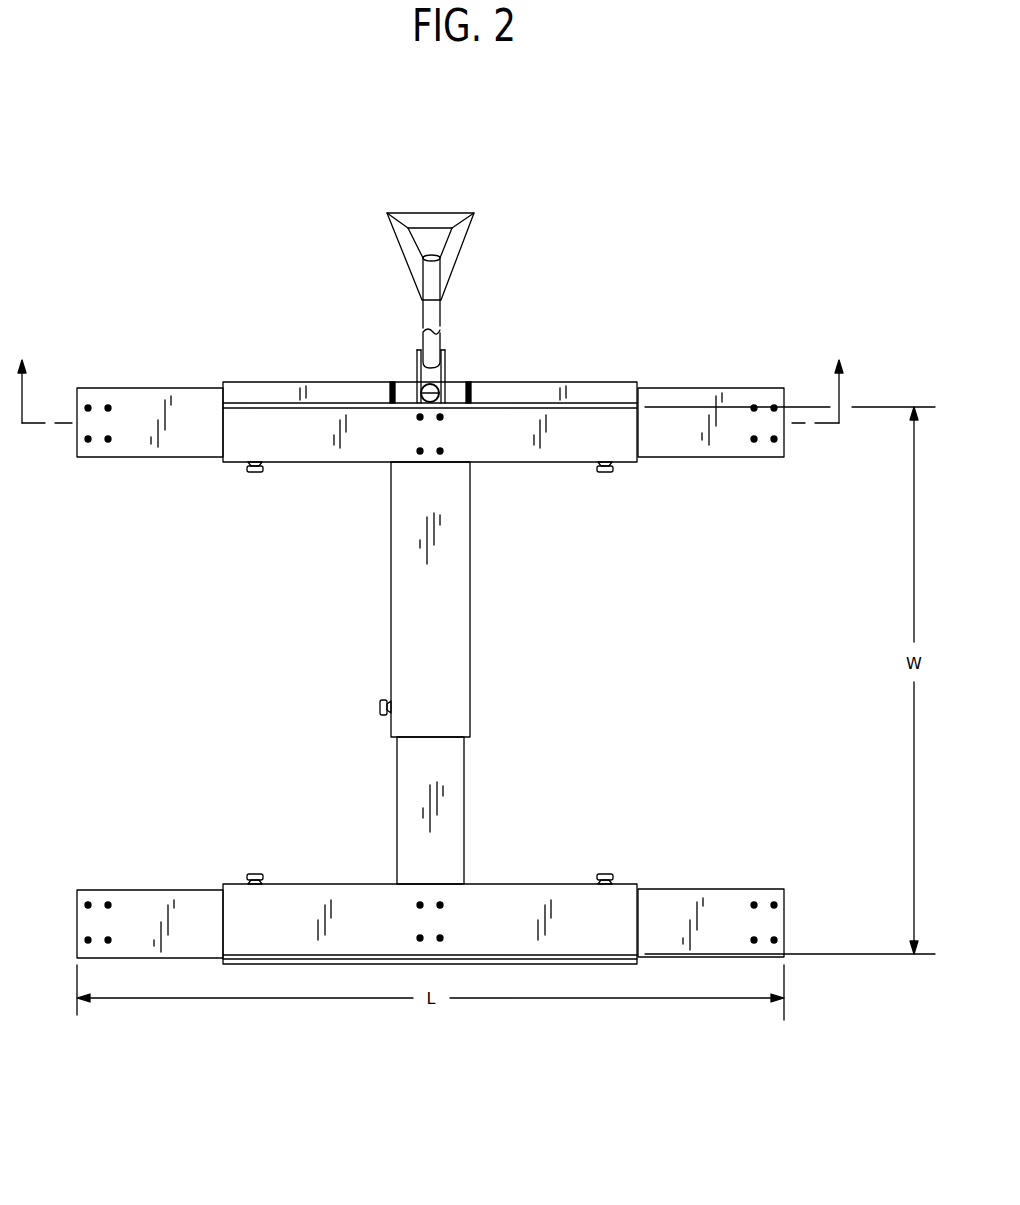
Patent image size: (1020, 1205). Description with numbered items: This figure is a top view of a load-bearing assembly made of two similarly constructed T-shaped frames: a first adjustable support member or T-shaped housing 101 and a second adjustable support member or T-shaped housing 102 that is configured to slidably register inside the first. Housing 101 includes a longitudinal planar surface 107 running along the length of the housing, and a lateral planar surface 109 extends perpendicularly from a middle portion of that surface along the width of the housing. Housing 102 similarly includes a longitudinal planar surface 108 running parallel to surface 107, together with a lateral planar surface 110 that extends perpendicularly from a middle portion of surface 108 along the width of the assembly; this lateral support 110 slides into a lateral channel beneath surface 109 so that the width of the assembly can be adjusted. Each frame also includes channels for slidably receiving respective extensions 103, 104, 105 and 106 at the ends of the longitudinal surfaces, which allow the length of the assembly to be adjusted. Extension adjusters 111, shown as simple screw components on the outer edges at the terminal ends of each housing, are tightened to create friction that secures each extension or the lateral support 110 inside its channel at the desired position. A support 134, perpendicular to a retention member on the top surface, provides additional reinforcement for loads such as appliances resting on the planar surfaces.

The first adjustable support member or T-shaped housing 101 is at (228, 218).
The second adjustable support member or T-shaped housing 102 is at (228, 1029).
The extension 103 is at (80, 483).
The extension 104 is at (638, 483).
The extension 105 is at (80, 865).
The extension 106 is at (638, 865).
The longitudinal planar surface 107 is at (372, 430).
The longitudinal planar surface 108 is at (388, 918).
The lateral planar surface 109 is at (418, 541).
The lateral planar surface 110 is at (452, 820).
The extension adjuster 111 is at (263, 472).
The support 134 is at (393, 382).